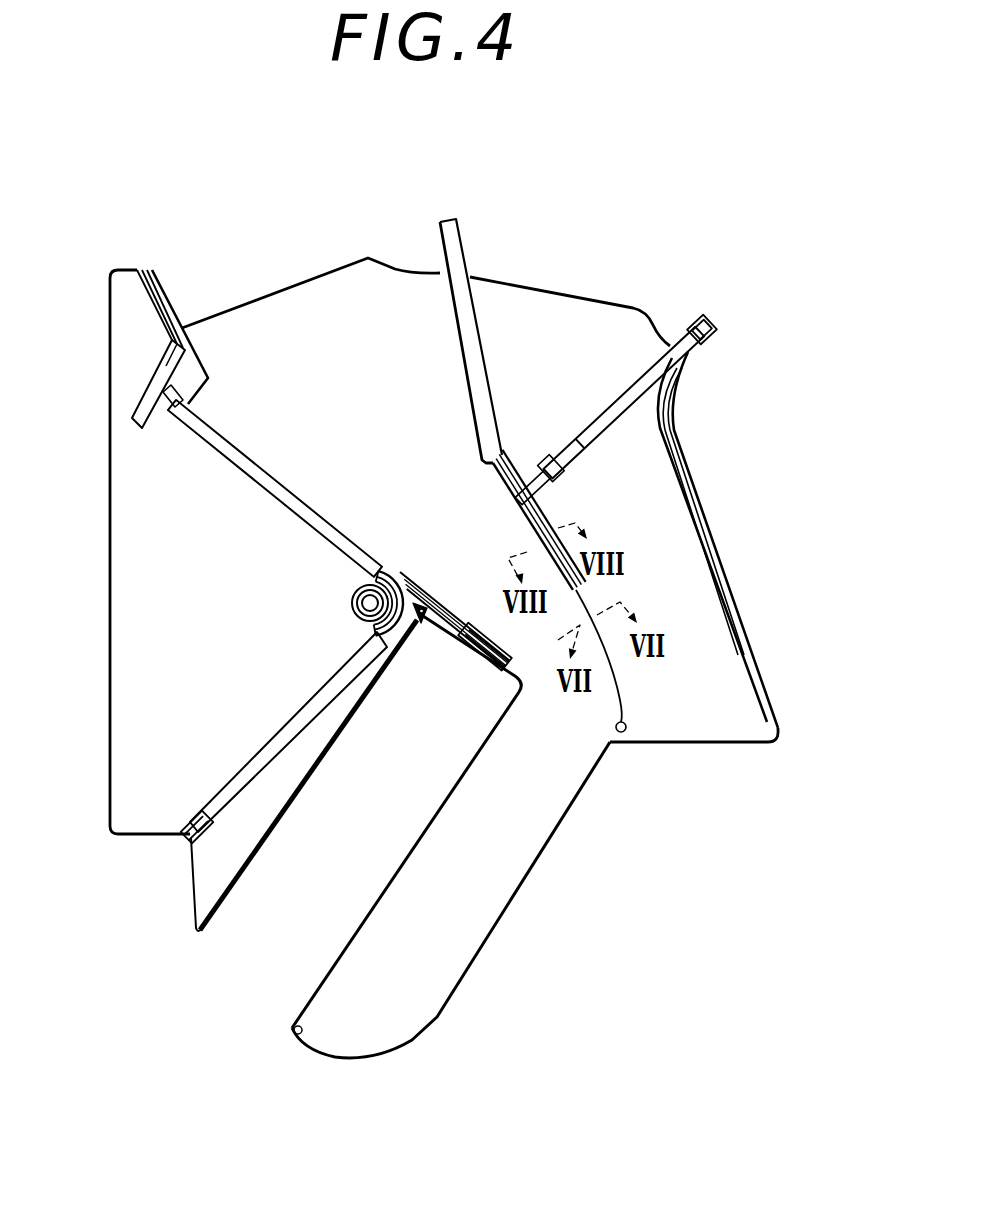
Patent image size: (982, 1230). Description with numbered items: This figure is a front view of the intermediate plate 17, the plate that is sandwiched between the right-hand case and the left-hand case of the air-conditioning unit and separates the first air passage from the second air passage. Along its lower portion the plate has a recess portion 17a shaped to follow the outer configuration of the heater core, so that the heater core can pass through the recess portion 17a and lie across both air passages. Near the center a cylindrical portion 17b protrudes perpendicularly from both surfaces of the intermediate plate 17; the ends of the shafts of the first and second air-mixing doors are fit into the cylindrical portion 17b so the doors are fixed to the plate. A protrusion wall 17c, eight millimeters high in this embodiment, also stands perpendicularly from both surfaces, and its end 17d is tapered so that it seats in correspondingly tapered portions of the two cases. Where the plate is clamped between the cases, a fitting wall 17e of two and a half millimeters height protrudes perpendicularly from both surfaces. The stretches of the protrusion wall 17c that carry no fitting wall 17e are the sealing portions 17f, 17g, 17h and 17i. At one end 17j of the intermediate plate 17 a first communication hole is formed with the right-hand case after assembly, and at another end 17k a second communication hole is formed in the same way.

The intermediate plate 17 is at (108, 248).
The recess portion 17a is at (368, 917).
The cylindrical portion 17b is at (352, 608).
The protrusion wall 17c is at (300, 553).
The end 17d is at (162, 285).
The fitting wall 17e is at (176, 329).
The sealing portion 17f is at (215, 455).
The sealing portion 17g is at (280, 728).
The sealing portion 17h is at (472, 325).
The sealing portion 17i is at (638, 374).
The one end 17j is at (320, 275).
The one end 17k is at (602, 300).